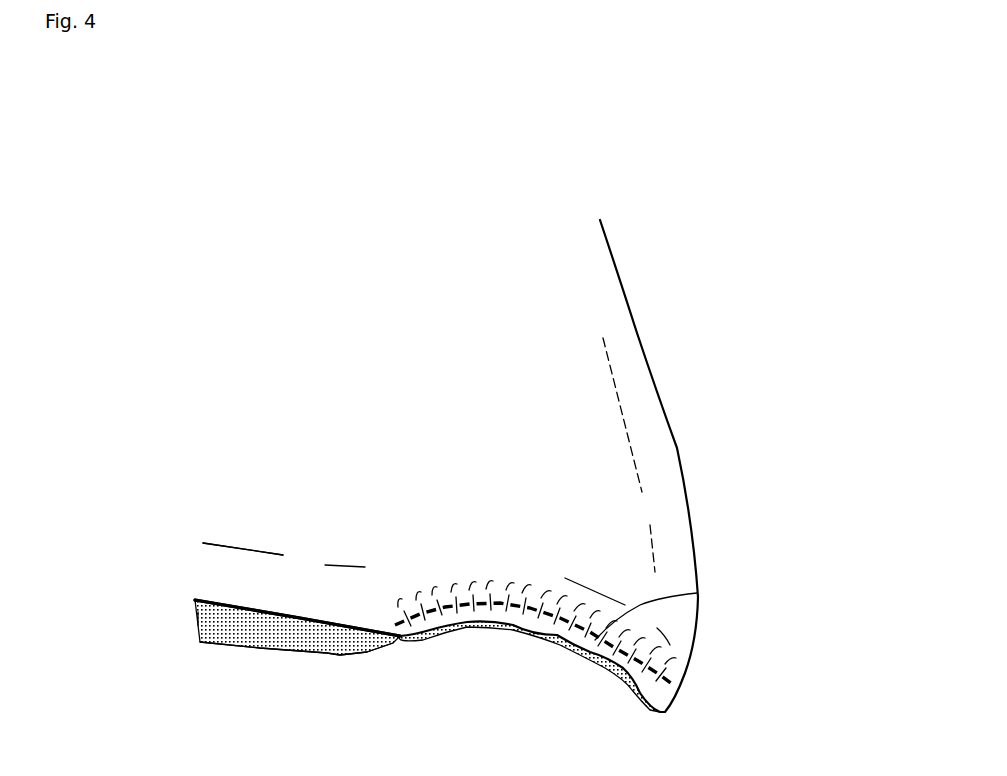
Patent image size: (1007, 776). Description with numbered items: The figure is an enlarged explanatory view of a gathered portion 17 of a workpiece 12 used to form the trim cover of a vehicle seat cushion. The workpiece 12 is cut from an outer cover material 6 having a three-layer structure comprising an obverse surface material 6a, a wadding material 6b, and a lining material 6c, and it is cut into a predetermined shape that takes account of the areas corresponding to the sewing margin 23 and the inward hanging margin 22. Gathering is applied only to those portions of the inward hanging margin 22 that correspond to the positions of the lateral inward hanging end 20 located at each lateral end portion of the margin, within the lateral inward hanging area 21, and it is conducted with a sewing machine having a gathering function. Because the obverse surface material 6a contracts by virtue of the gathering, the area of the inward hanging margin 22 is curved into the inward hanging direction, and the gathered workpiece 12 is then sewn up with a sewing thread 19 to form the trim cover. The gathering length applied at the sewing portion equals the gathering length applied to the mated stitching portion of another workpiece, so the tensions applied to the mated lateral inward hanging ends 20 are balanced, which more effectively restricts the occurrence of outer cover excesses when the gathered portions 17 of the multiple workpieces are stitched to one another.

The workpiece 12 is at (380, 160).
The outer cover material 6 is at (97, 593).
The obverse surface material 6a is at (193, 598).
The wadding material 6b is at (198, 617).
The lining material 6c is at (203, 638).
The gathered portion 17 is at (697, 593).
The sewing thread 19 is at (688, 657).
The lateral inward hanging end 20 is at (553, 590).
The lateral inward hanging area 21 is at (300, 570).
The inward hanging margin 22 is at (557, 382).
The sewing margin 23 is at (192, 572).